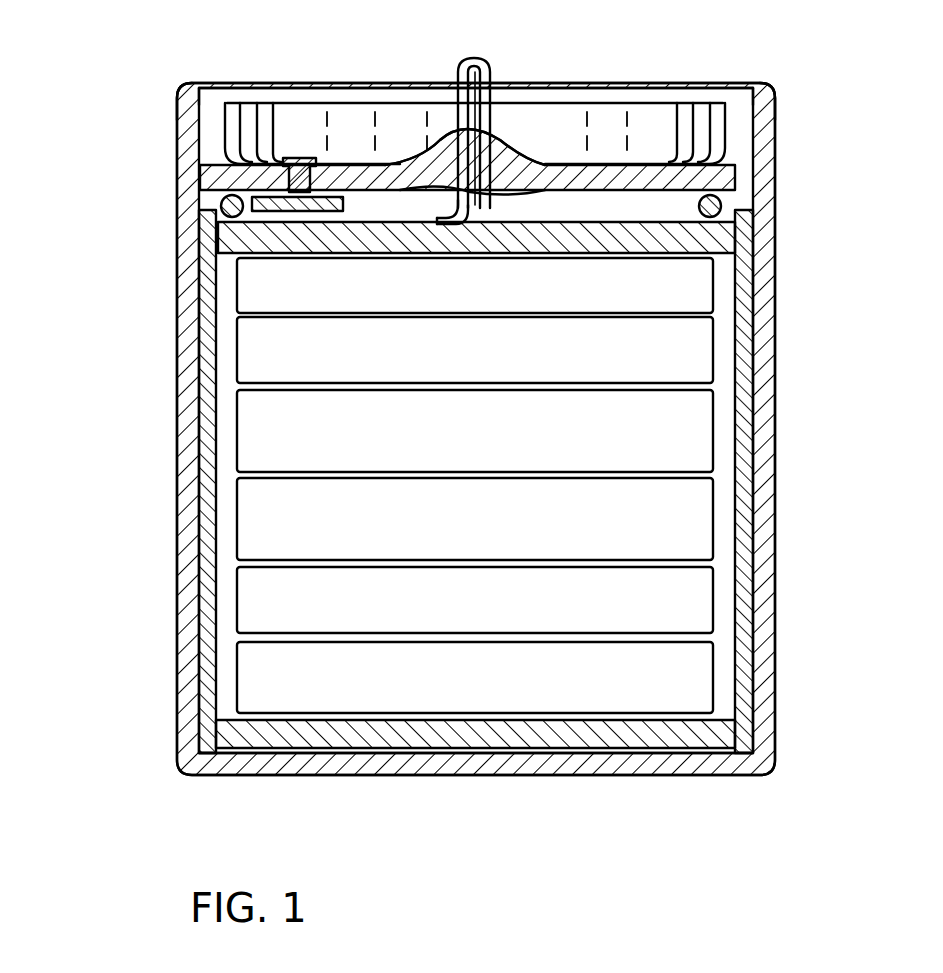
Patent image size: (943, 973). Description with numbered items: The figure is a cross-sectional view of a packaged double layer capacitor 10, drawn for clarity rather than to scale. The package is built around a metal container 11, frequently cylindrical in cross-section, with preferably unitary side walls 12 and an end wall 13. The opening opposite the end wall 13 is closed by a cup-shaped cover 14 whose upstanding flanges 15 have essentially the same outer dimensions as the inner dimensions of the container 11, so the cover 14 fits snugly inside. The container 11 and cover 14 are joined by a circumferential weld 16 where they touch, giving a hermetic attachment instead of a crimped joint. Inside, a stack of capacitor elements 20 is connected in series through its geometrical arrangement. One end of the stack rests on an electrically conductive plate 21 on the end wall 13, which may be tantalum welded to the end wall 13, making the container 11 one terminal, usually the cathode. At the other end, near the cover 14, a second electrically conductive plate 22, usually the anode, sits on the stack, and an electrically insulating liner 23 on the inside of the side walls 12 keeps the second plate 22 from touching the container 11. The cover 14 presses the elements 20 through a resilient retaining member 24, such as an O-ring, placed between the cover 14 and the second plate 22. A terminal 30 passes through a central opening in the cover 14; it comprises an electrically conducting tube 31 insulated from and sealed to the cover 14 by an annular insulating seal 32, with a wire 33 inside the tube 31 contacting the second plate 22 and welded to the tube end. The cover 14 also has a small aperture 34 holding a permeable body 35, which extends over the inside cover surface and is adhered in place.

The packaged double layer capacitor 10 is at (155, 462).
The container 11 is at (760, 420).
The side walls 12 is at (176, 660).
The end wall 13 is at (406, 778).
The cup-shaped cover 14 is at (578, 182).
The upstanding flanges 15 is at (225, 110).
The circumferential weld 16 is at (215, 104).
The stack of capacitor elements 20 is at (680, 505).
The electrically conductive plate 21 is at (546, 743).
The second electrically conductive plate 22 is at (750, 222).
The electrically insulating liner 23 is at (750, 290).
The resilient retaining member 24 is at (740, 196).
The terminal 30 is at (496, 72).
The electrically conducting tube 31 is at (520, 92).
The annular insulating seal 32 is at (490, 142).
The wire 33 is at (460, 118).
The aperture 34 is at (329, 174).
The permeable body 35 is at (300, 158).